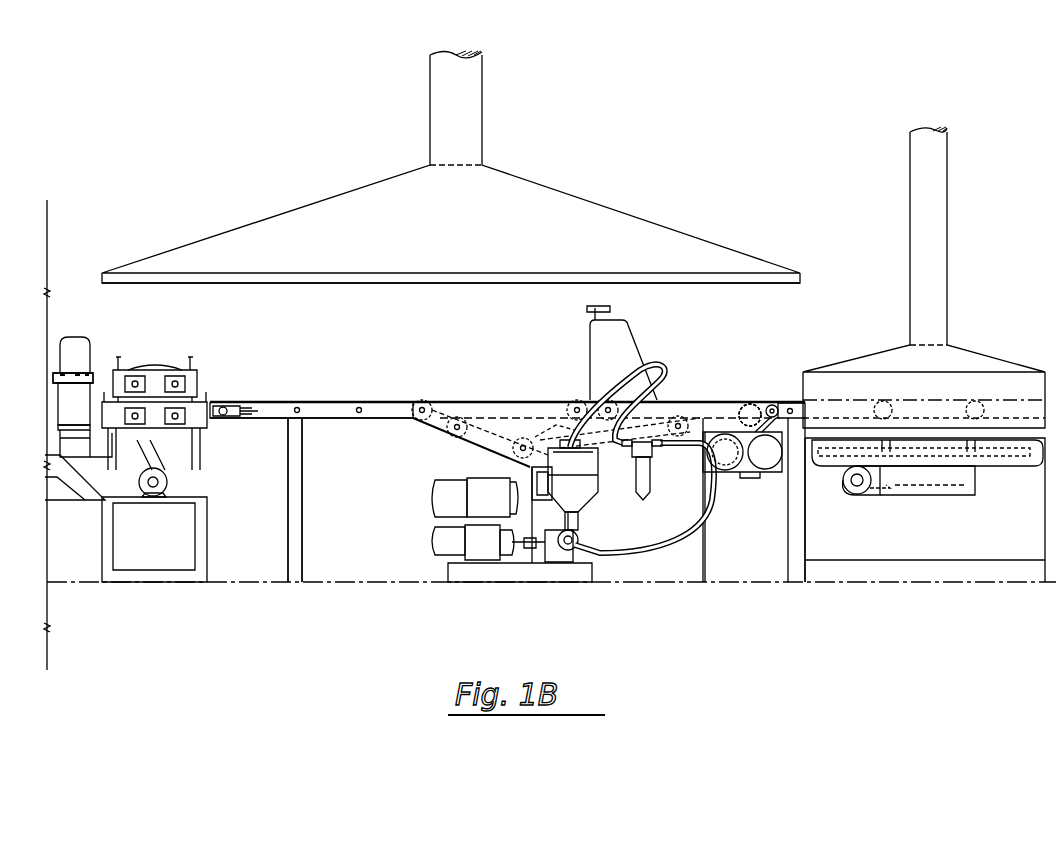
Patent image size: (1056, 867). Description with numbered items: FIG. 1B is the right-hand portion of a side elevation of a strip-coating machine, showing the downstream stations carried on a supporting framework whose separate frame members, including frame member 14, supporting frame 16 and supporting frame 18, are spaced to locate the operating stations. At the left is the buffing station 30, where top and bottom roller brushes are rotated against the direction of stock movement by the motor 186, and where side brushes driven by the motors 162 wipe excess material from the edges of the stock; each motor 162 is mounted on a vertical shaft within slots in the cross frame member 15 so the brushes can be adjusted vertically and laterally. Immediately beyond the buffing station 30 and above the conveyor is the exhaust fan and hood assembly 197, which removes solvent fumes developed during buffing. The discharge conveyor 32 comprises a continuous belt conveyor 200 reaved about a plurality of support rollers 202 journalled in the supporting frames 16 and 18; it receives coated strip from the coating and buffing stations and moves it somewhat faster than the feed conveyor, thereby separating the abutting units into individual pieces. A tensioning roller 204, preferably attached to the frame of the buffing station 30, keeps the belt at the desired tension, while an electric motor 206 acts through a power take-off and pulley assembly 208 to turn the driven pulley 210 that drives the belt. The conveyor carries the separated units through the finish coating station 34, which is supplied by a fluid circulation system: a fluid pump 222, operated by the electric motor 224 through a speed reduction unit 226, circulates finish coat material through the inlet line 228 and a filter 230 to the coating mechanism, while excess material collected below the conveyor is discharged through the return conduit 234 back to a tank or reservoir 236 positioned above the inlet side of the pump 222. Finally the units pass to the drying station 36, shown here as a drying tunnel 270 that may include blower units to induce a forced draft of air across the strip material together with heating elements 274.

The frame member 14 is at (188, 545).
The cross frame member 15 is at (93, 380).
The supporting frame 16 is at (298, 535).
The supporting frame 18 is at (695, 555).
The buffing station 30 is at (167, 443).
The discharge conveyor 32 is at (250, 352).
The finish coating station 34 is at (548, 342).
The drying station 36 is at (905, 456).
The motor 162 is at (82, 338).
The motor 186 is at (170, 480).
The exhaust fan and hood assembly 197 is at (242, 180).
The continuous belt conveyor 200 is at (330, 402).
The support rollers 202 is at (560, 440).
The tensioning roller 204 is at (220, 423).
The electric motor 206 is at (748, 472).
The power take-off and pulley assembly 208 is at (746, 387).
The driven pulley 210 is at (750, 404).
The fluid pump 222 is at (577, 540).
The electric motor 224 is at (486, 488).
The speed reduction unit 226 is at (447, 540).
The inlet line 228 is at (658, 366).
The filter 230 is at (645, 481).
The return conduit 234 is at (556, 440).
The tank or reservoir 236 is at (595, 488).
The drying tunnel 270 is at (855, 328).
The heating elements 274 is at (912, 498).